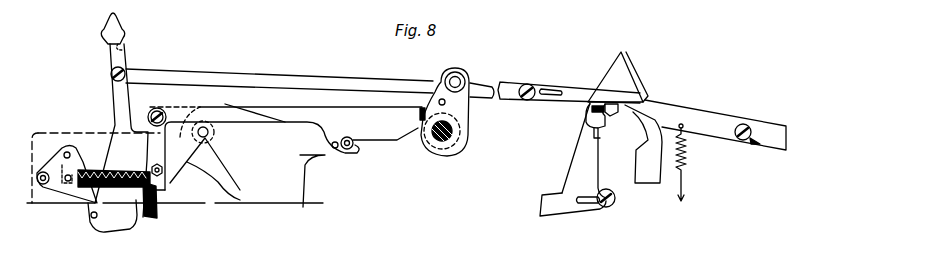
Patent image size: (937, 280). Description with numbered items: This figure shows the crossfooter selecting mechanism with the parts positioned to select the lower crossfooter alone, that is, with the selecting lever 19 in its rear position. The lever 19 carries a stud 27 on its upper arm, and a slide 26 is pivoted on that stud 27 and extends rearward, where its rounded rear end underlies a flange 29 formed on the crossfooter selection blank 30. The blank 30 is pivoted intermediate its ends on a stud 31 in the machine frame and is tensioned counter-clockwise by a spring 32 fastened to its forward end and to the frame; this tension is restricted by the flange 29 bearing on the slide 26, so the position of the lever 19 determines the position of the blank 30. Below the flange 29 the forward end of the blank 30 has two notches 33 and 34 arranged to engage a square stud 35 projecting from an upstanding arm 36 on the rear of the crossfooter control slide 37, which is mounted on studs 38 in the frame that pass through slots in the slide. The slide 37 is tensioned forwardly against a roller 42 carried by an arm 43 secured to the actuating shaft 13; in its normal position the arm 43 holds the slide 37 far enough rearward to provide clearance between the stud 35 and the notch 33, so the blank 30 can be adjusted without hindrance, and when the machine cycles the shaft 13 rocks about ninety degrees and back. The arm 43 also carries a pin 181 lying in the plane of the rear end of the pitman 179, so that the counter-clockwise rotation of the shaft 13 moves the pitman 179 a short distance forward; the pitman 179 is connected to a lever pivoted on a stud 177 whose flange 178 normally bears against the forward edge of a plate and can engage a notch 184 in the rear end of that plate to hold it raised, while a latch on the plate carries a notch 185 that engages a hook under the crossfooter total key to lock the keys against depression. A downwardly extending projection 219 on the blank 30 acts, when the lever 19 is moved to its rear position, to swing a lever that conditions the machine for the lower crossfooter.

The actuating shaft 13 is at (434, 140).
The lever 19 is at (126, 62).
The slide 26 is at (298, 76).
The stud 27 is at (110, 76).
The flange 29 is at (630, 61).
The crossfooter selection blank 30 is at (691, 110).
The stud 31 is at (746, 124).
The spring 32 is at (687, 156).
The notch 33 is at (617, 112).
The notch 34 is at (608, 128).
The square stud 35 is at (600, 140).
The upstanding arm 36 is at (575, 158).
The crossfooter control slide 37 is at (543, 206).
The studs 38 is at (604, 208).
The roller 42 is at (462, 70).
The arm 43 is at (470, 104).
The stud 177 is at (163, 168).
The flange 178 is at (160, 191).
The pitman 179 is at (281, 107).
The pin 181 is at (441, 99).
The notch 184 is at (156, 200).
The notch 185 is at (93, 172).
The projection 219 is at (652, 185).